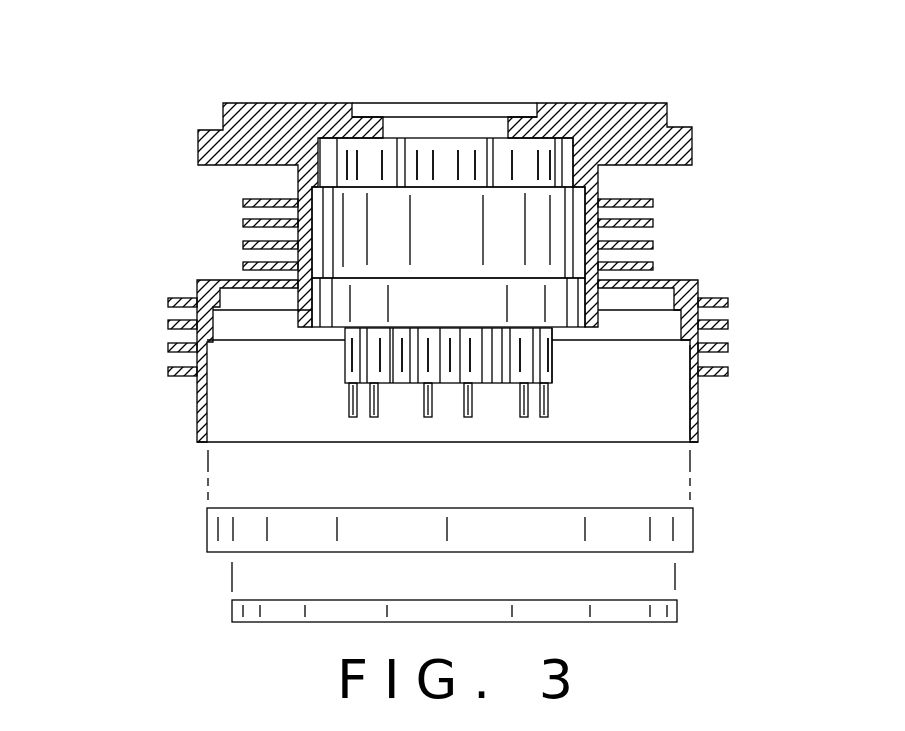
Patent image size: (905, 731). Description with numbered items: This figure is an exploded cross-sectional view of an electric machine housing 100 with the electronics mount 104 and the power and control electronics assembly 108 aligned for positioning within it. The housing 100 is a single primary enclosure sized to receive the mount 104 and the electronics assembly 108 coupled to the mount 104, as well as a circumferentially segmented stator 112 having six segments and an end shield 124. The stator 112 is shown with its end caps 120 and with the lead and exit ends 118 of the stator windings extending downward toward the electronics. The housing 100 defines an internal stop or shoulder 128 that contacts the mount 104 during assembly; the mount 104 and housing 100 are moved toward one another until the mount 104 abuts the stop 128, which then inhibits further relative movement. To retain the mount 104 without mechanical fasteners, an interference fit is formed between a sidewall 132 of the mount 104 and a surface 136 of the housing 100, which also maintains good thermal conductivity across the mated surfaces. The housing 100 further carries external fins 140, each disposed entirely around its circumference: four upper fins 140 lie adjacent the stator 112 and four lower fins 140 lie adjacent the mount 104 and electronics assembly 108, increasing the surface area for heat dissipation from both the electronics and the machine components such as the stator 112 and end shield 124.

The housing 100 is at (692, 142).
The mount 104 is at (693, 529).
The power and control electronics assembly 108 is at (677, 607).
The stator 112 is at (567, 190).
The lead and exit ends 118 is at (374, 418).
The end caps 120 is at (435, 150).
The end shield 124 is at (563, 328).
The stop 128 is at (209, 343).
The sidewall 132 is at (207, 531).
The surface 136 is at (690, 373).
The fins 140 is at (240, 223).